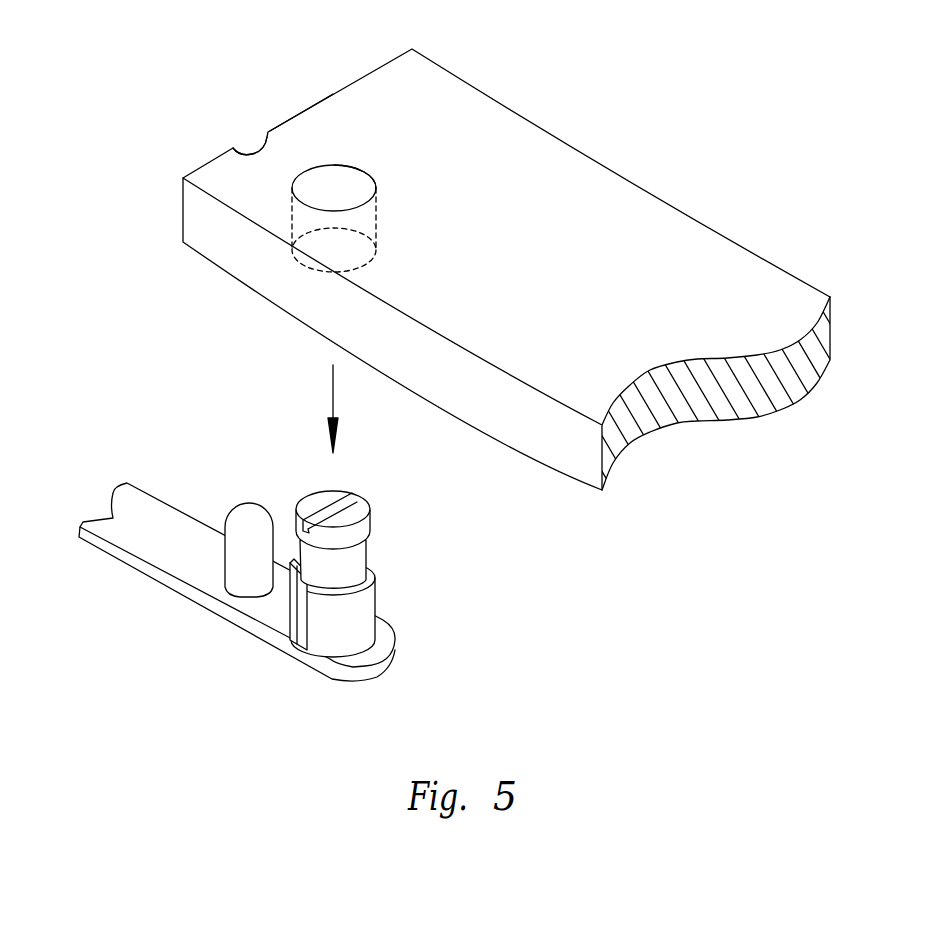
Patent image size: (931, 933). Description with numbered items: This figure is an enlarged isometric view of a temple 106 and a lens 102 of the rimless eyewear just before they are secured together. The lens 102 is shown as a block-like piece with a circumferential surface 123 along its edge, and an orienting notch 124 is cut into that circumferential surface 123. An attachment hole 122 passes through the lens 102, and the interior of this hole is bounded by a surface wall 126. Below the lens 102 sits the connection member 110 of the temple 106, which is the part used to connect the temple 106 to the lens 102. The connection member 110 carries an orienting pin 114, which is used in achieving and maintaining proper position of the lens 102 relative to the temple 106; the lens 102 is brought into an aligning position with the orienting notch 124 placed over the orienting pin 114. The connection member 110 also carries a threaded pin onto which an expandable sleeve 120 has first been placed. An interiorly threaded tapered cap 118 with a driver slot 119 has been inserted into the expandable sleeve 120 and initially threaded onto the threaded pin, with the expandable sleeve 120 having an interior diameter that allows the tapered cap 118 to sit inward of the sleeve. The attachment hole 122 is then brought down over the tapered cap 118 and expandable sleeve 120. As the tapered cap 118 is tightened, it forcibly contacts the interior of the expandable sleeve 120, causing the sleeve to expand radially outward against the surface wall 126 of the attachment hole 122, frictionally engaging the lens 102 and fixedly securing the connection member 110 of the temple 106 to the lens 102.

The lens 102 is at (585, 160).
The circumferential surface 123 is at (333, 90).
The orienting notch 124 is at (253, 148).
The attachment hole 122 is at (333, 187).
The surface wall 126 is at (365, 190).
The temple 106 is at (249, 558).
The connection member 110 is at (267, 647).
The orienting pin 114 is at (250, 503).
The tapered cap 118 is at (378, 511).
The driver slot 119 is at (330, 498).
The expandable sleeve 120 is at (377, 600).